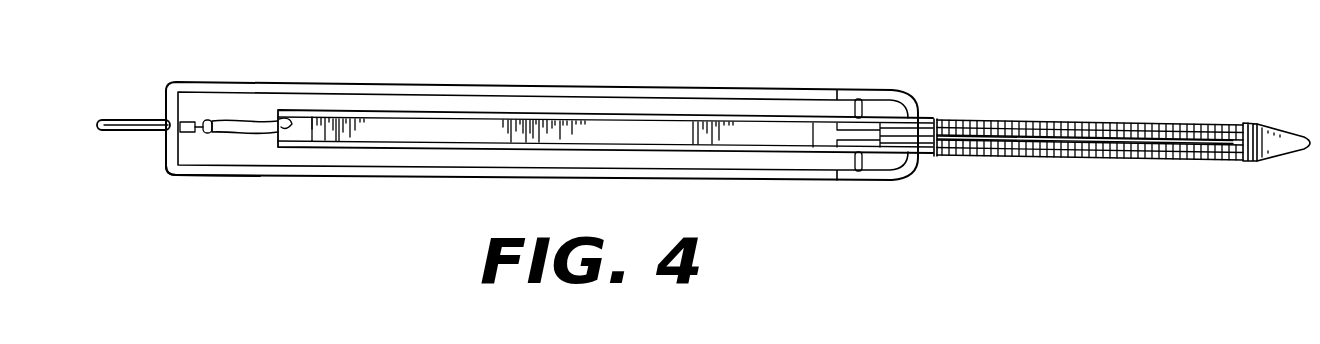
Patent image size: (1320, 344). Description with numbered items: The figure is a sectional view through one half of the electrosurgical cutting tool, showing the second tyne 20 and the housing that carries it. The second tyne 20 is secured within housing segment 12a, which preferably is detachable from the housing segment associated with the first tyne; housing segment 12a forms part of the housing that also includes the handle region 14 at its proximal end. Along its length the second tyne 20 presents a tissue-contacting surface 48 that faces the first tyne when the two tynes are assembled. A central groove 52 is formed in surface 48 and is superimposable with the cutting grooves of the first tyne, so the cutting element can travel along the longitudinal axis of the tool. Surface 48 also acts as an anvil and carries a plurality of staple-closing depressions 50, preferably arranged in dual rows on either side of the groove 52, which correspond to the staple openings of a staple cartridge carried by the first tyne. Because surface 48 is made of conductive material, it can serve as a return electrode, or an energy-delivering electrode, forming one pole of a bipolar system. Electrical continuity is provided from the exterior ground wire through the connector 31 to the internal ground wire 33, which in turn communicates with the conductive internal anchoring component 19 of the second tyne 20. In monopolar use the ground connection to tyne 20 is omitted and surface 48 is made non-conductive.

The housing segment 12a is at (218, 174).
The handle region 14 is at (568, 88).
The conductive internal anchoring component 19 is at (378, 110).
The second tyne 20 is at (1193, 165).
The connector 31 is at (137, 120).
The internal ground wire 33 is at (263, 112).
The tissue-contacting surface 48 is at (1122, 142).
The staple-closing depressions 50 is at (1090, 128).
The central groove 52 is at (1155, 142).